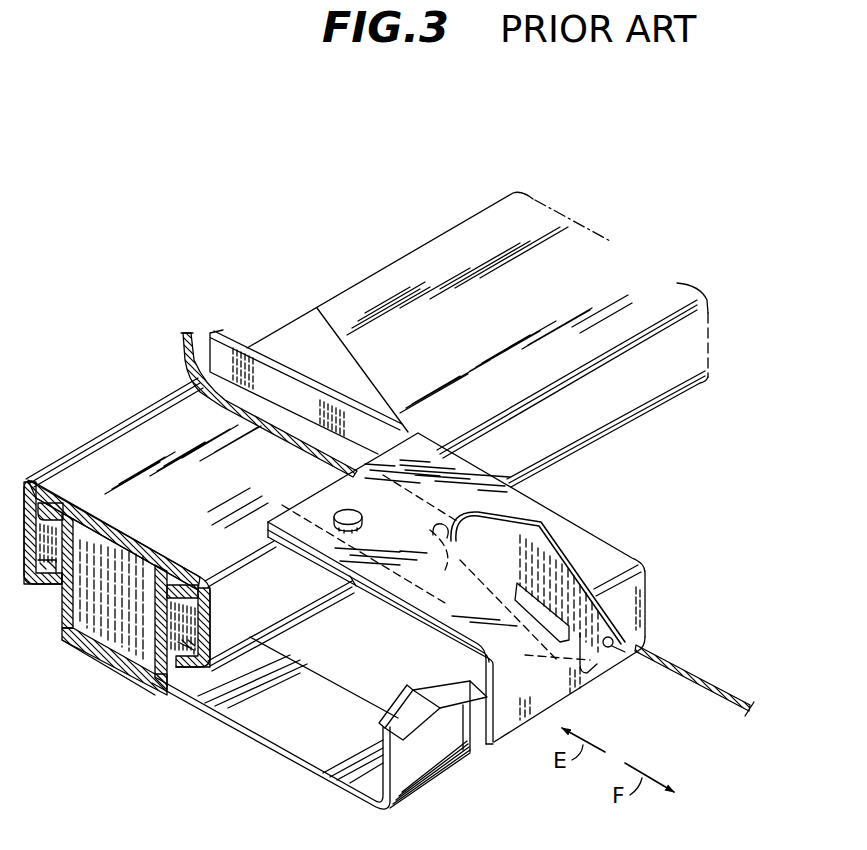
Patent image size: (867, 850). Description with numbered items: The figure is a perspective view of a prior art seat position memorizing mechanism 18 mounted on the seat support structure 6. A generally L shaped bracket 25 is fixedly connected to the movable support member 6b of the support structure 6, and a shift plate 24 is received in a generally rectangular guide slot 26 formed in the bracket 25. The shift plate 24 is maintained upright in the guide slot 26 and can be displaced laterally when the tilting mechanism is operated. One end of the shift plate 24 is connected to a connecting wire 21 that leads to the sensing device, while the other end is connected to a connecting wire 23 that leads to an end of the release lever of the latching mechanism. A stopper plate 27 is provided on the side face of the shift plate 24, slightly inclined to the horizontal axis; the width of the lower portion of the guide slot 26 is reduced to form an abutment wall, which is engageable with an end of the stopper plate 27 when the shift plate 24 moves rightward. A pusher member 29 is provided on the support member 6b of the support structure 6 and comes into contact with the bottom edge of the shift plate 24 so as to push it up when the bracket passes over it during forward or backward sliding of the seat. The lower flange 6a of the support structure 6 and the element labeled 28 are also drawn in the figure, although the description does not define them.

The support structure 6 is at (612, 268).
The lower flange of rail 6a is at (88, 640).
The movable support member 6b is at (100, 445).
The seat position memorizing mechanism 18 is at (662, 547).
The connecting wire 21 is at (226, 405).
The connecting wire 23 is at (708, 681).
The shift plate 24 is at (609, 622).
The L shaped bracket 25 is at (606, 556).
The guide slot 26 is at (502, 525).
The stopper plate 27 is at (515, 598).
The tab 28 is at (562, 632).
The pusher member 29 is at (390, 722).